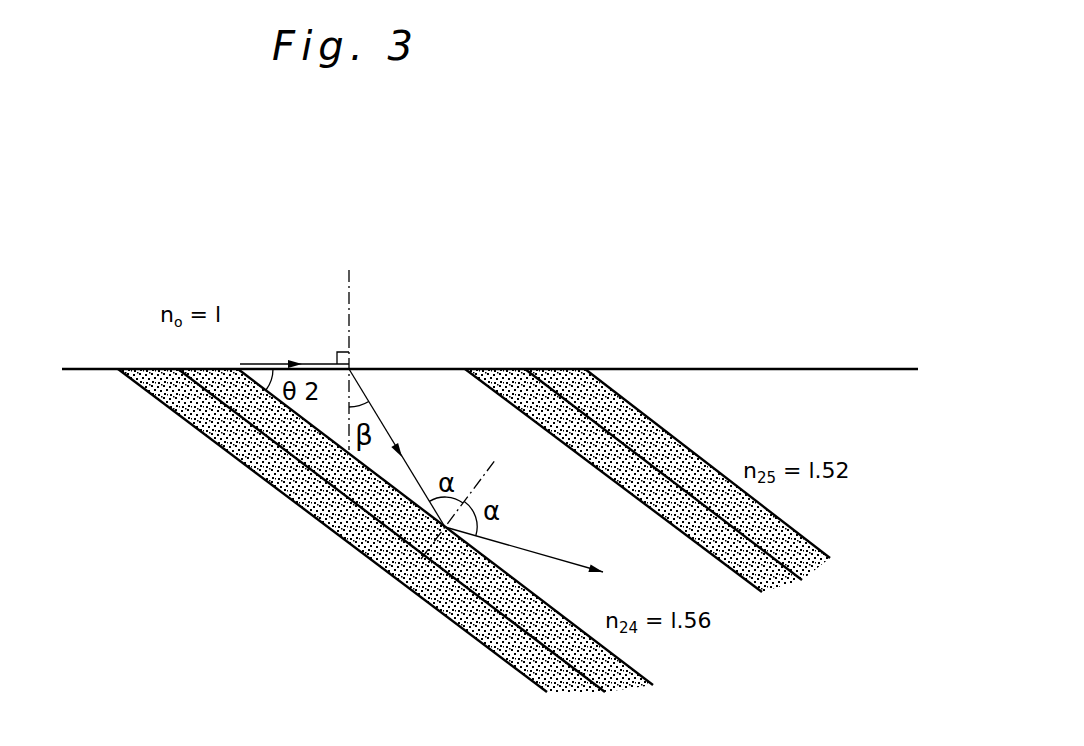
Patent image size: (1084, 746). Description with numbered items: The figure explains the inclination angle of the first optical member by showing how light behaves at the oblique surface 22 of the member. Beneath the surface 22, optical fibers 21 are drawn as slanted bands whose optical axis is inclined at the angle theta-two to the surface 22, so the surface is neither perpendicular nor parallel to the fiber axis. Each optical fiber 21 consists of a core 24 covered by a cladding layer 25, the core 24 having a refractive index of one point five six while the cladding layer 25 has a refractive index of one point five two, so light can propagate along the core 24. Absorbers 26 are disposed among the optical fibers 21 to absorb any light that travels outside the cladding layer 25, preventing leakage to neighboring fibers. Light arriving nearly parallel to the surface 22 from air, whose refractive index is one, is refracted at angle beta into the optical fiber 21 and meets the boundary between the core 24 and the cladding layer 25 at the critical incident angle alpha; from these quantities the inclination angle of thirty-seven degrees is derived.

The optical fiber 21 is at (528, 293).
The surface 22 is at (712, 369).
The core 24 is at (98, 392).
The cladding layer 25 is at (500, 388).
The absorber 26 is at (560, 387).